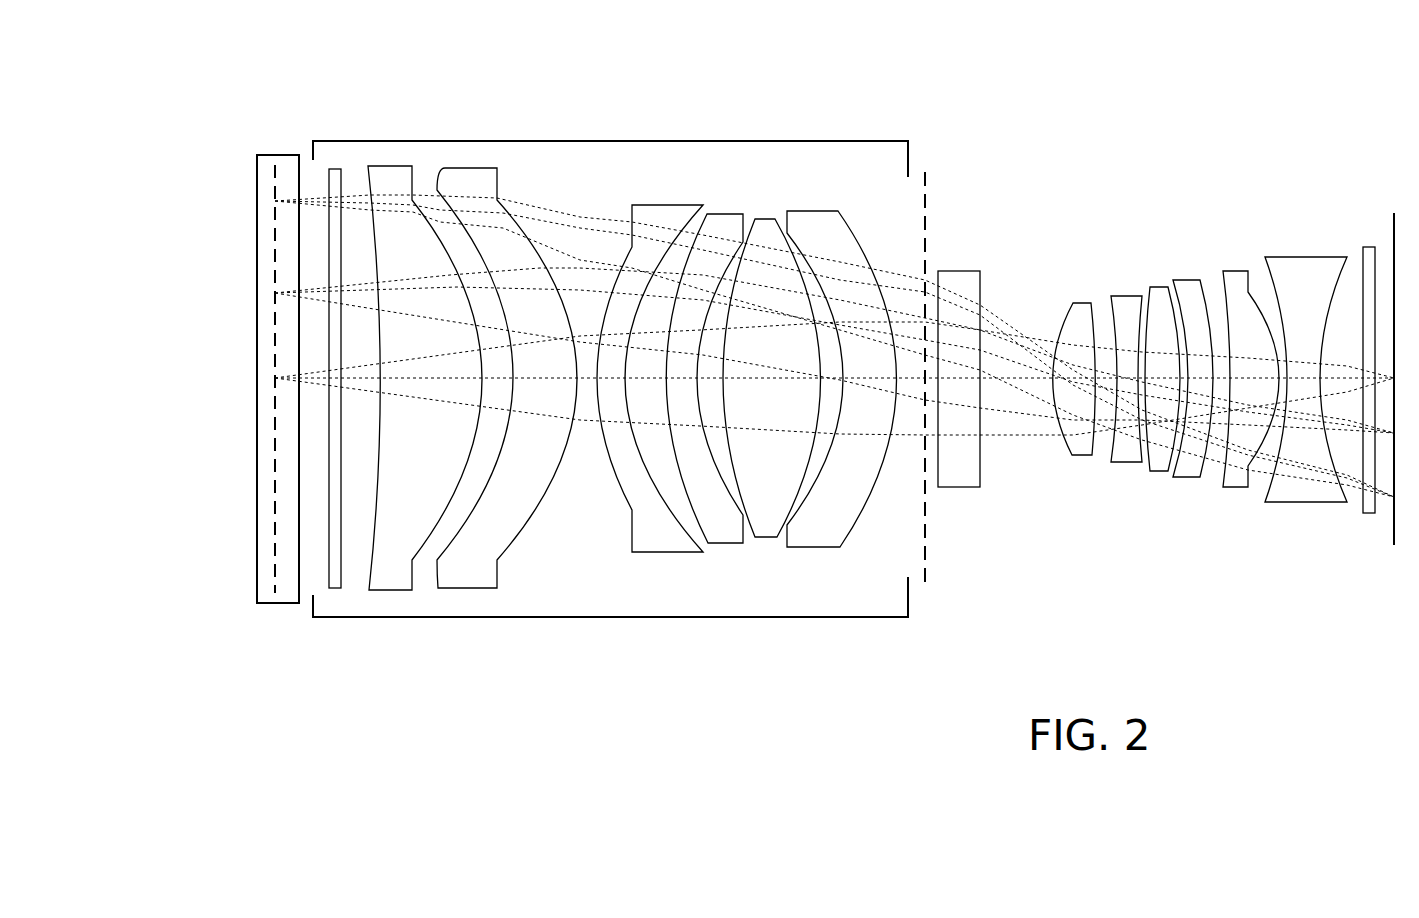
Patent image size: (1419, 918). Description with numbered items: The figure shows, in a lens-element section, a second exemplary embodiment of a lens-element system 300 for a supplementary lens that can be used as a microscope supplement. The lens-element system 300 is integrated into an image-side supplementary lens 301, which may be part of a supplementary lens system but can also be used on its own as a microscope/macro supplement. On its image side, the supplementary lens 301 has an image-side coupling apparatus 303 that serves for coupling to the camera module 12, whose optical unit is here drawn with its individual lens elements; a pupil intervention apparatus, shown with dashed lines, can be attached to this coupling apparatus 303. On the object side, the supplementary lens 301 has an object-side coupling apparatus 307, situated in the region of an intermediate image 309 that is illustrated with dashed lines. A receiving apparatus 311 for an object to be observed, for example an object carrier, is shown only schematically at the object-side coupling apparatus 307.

The camera module 12 is at (1393, 562).
The lens-element system 300 is at (940, 655).
The supplementary lens 301 is at (425, 141).
The image-side coupling apparatus 303 is at (908, 152).
The object-side coupling apparatus 307 is at (313, 146).
The intermediate image 309 is at (272, 177).
The receiving apparatus 311 is at (257, 237).